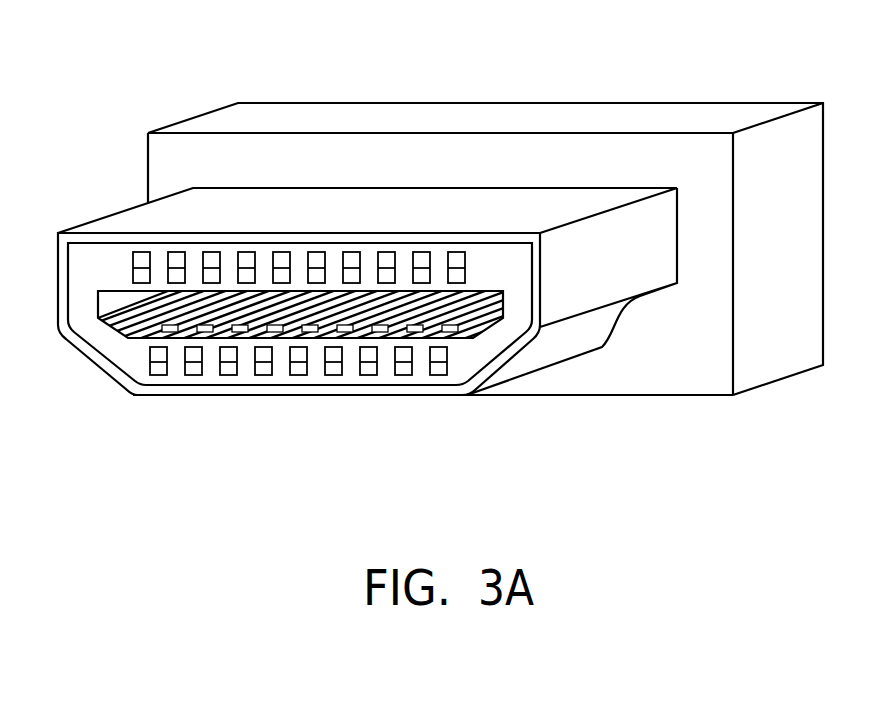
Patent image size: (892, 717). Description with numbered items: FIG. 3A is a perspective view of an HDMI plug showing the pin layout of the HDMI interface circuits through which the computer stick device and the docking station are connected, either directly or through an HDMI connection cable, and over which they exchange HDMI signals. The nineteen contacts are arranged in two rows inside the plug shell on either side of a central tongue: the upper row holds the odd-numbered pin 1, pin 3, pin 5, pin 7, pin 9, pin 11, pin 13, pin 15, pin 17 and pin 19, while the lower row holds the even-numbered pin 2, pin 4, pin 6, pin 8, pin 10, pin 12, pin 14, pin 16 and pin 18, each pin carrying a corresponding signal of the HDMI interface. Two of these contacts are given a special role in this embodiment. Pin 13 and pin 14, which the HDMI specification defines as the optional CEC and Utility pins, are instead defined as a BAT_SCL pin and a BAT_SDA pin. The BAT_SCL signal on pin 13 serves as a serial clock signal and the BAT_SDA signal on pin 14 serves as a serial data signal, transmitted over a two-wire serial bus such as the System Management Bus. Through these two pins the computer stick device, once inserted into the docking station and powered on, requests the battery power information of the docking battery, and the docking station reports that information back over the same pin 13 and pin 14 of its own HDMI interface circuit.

The HDMI interface pin 1 is at (142, 259).
The HDMI interface pin 2 is at (158, 371).
The HDMI interface pin 3 is at (176, 259).
The HDMI interface pin 4 is at (194, 371).
The HDMI interface pin 5 is at (212, 259).
The HDMI interface pin 6 is at (228, 371).
The HDMI interface pin 7 is at (246, 259).
The HDMI interface pin 8 is at (264, 371).
The HDMI interface pin 9 is at (282, 259).
The HDMI interface pin 10 is at (298, 371).
The HDMI interface pin 11 is at (316, 259).
The HDMI interface pin 12 is at (334, 371).
The BAT_SCL pin 13 is at (352, 259).
The BAT_SDA pin 14 is at (368, 371).
The HDMI interface pin 15 is at (386, 259).
The HDMI interface pin 16 is at (404, 371).
The HDMI interface pin 17 is at (422, 259).
The HDMI interface pin 18 is at (438, 371).
The HDMI interface pin 19 is at (456, 259).